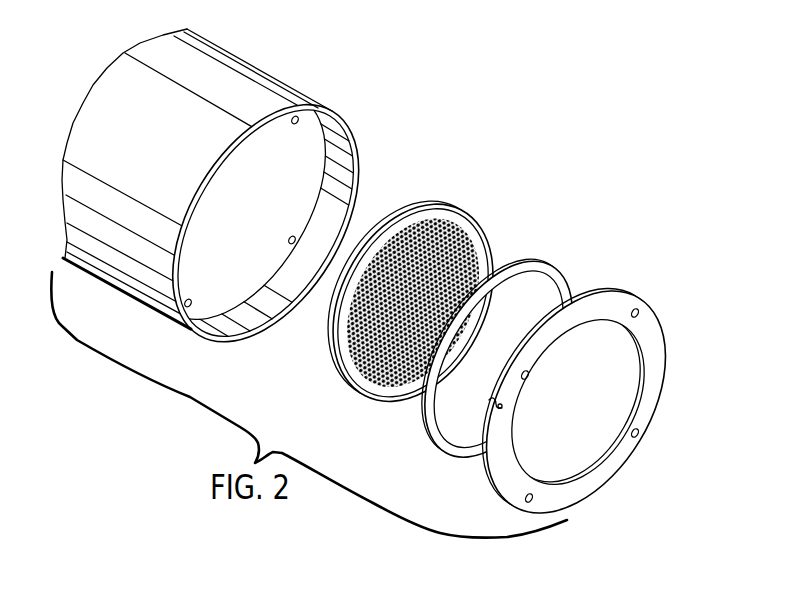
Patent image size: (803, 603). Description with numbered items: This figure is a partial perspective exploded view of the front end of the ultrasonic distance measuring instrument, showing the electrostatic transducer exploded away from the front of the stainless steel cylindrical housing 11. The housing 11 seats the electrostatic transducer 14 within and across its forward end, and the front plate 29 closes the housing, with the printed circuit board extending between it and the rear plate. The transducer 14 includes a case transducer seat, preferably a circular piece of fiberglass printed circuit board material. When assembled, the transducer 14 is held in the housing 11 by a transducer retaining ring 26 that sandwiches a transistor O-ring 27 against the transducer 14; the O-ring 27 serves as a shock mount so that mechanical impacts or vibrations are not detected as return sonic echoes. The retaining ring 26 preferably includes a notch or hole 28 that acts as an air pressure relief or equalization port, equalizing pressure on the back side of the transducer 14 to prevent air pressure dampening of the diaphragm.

The cylindrical housing 11 is at (142, 148).
The front plate 29 is at (238, 213).
The electrostatic transducer 14 is at (480, 233).
The transistor O-ring 27 is at (562, 280).
The notch or hole 28 is at (489, 400).
The transducer retaining ring 26 is at (653, 328).